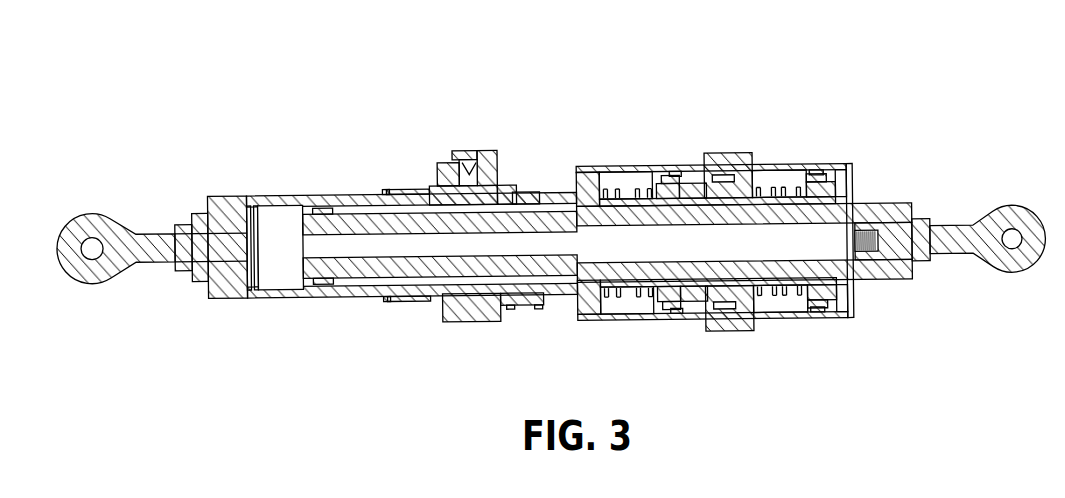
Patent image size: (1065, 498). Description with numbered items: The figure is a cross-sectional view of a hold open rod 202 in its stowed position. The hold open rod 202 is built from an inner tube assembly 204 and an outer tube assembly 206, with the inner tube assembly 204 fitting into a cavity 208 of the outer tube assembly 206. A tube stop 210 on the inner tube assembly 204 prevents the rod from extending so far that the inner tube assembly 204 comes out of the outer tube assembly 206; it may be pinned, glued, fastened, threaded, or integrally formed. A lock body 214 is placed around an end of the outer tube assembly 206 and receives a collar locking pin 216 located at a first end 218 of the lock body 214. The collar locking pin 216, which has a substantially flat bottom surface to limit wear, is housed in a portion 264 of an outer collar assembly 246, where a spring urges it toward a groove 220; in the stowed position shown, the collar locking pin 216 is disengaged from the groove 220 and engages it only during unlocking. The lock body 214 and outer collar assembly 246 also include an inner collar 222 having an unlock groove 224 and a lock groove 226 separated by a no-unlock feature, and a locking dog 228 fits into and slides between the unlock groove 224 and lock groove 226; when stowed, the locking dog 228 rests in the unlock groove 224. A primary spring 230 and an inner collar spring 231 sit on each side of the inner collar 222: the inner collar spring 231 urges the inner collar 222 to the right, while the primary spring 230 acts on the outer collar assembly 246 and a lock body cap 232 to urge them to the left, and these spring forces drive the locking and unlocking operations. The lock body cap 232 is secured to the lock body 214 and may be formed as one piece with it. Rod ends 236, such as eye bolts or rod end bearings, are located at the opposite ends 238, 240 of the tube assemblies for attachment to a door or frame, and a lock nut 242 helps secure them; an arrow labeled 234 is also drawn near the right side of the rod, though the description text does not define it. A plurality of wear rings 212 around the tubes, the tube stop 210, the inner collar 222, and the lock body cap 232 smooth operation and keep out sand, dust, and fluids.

The hold open rod 202 is at (787, 101).
The inner tube assembly 204 is at (867, 275).
The outer tube assembly 206 is at (277, 188).
The cavity 208 is at (288, 271).
The tube stop 210 is at (352, 213).
The wear rings 212 is at (325, 203).
The lock body 214 is at (640, 300).
The collar locking pin 216 is at (476, 154).
The first end 218 is at (438, 118).
The groove 220 is at (508, 185).
The inner collar 222 is at (740, 311).
The unlock groove 224 is at (680, 181).
The lock groove 226 is at (722, 181).
The locking dog 228 is at (700, 201).
The primary spring 230 is at (777, 180).
The inner collar spring 231 is at (634, 178).
The lock body cap 232 is at (830, 181).
The right end assembly 234 is at (896, 88).
The rod ends 236 is at (95, 214).
The end 238 is at (90, 303).
The end 240 is at (963, 192).
The lock nut 242 is at (178, 220).
The outer collar assembly 246 is at (607, 309).
The portion 264 is at (452, 160).